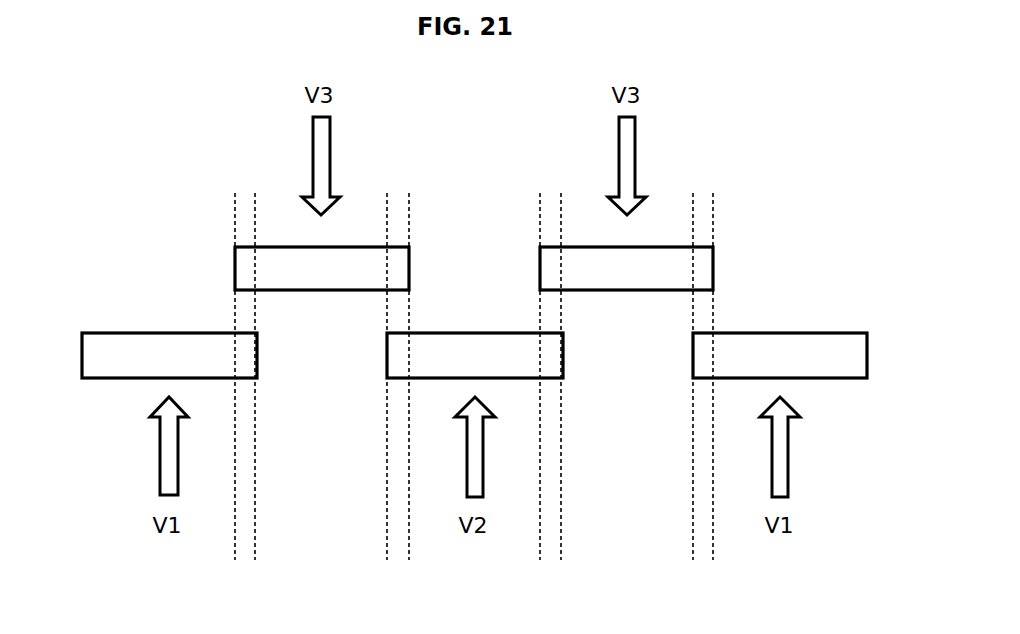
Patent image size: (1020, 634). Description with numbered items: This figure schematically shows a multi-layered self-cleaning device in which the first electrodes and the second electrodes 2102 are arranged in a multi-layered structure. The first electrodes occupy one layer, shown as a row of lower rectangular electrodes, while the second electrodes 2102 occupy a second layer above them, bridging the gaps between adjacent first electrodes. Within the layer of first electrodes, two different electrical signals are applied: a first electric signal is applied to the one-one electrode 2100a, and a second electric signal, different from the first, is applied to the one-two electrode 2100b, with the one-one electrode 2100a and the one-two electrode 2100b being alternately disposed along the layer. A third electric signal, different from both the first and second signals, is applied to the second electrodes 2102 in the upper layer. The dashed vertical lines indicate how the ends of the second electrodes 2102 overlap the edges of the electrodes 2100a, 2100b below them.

The 1-1 electrode 2100a is at (122, 378).
The 1-2 electrode 2100b is at (428, 378).
The second electrode 2102 is at (713, 268).